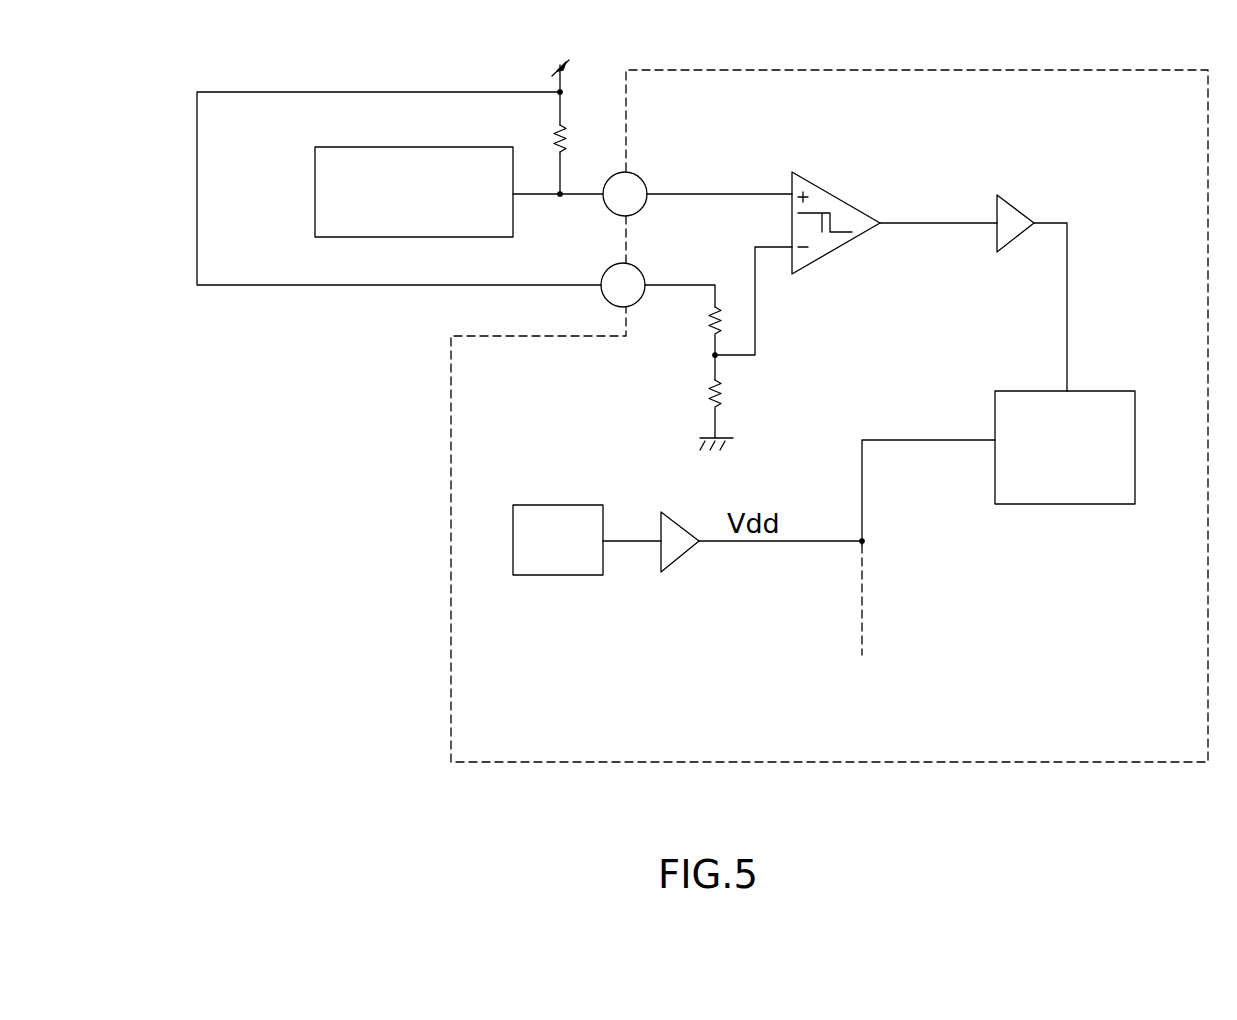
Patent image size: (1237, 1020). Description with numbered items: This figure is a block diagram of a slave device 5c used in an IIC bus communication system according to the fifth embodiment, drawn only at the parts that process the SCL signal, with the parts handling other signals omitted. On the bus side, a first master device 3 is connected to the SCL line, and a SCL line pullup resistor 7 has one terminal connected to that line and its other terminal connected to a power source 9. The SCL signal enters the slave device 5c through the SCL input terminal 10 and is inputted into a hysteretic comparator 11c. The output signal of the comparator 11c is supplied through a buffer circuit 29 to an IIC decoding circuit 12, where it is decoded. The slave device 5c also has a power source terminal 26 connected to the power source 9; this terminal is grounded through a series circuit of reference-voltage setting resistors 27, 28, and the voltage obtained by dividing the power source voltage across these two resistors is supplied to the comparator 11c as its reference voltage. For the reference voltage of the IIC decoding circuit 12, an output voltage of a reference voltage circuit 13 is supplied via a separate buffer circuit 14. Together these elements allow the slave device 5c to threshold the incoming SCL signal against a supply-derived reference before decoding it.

The first master device 3 is at (315, 198).
The SCL line pullup resistor 7 is at (545, 128).
The power source 9 is at (557, 62).
The SCL input terminal 10 is at (607, 213).
The power source terminal 26 is at (607, 301).
The reference-voltage setting resistor 27 is at (700, 312).
The reference-voltage setting resistor 28 is at (700, 383).
The hysteretic comparator 11c is at (833, 250).
The buffer circuit 29 is at (1016, 205).
The IIC decoding circuit 12 is at (1068, 504).
The reference voltage circuit 13 is at (540, 575).
The buffer circuit 14 is at (712, 556).
The slave device 5c is at (985, 766).